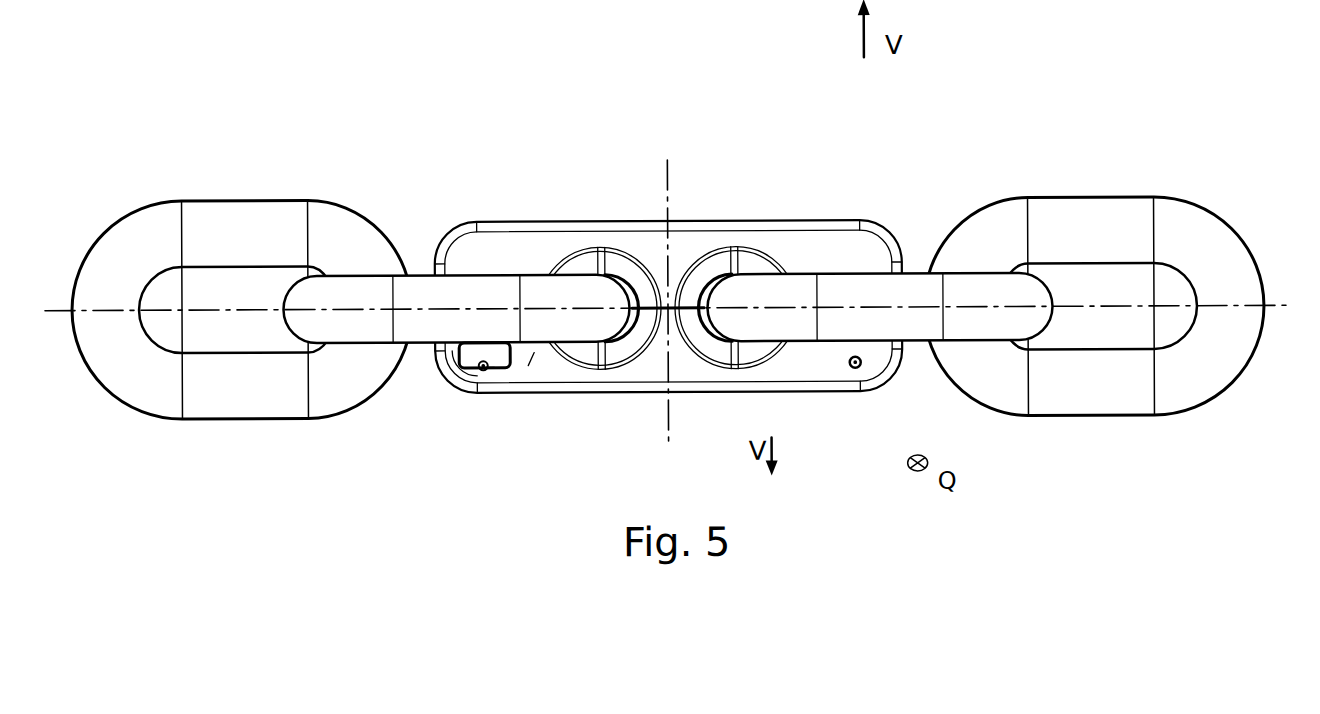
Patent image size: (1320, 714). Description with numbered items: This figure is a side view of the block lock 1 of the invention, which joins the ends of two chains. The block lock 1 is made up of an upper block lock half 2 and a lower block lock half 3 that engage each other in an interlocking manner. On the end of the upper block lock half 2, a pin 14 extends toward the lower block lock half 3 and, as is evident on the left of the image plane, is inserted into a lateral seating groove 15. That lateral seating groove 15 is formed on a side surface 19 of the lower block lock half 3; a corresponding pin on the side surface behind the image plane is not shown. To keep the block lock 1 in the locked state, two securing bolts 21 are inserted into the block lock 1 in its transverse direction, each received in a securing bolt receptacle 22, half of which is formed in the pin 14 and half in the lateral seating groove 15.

The block lock 1 is at (586, 168).
The upper block lock half 2 is at (822, 248).
The lower block lock half 3 is at (815, 376).
The pin 14 is at (498, 357).
The lateral seating groove 15 is at (436, 360).
The side surface 19 is at (528, 365).
The securing bolt 21 is at (478, 372).
The securing bolt receptacle 22 is at (491, 380).